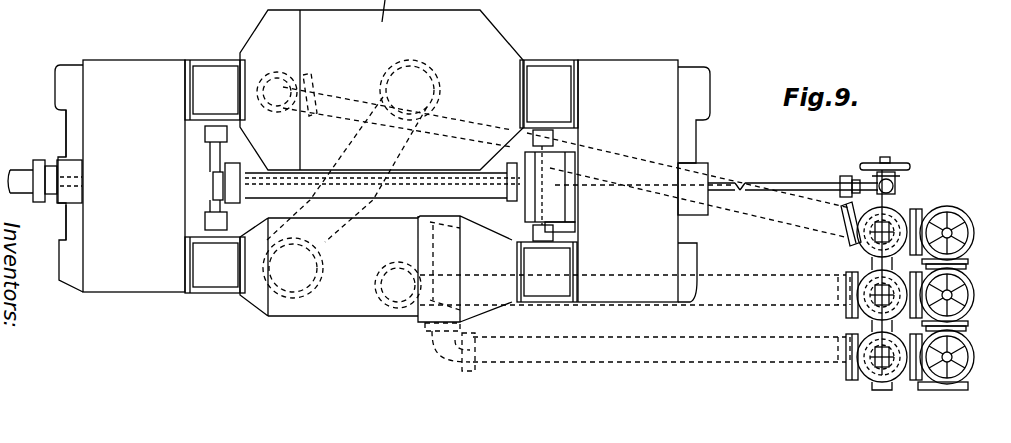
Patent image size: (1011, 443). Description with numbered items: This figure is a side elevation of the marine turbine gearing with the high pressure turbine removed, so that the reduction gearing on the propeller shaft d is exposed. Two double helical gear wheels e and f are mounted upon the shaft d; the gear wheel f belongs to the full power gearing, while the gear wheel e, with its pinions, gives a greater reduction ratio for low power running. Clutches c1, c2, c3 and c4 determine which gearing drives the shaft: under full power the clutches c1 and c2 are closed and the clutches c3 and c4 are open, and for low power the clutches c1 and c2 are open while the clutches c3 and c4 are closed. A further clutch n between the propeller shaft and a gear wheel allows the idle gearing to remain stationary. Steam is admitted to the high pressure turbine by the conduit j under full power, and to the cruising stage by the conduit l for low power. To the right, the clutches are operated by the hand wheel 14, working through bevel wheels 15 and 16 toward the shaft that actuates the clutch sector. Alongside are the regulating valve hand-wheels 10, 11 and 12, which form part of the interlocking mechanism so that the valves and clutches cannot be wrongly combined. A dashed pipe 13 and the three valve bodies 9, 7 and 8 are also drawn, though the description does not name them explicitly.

The double helical gear wheel e is at (140, 70).
The propeller shaft d is at (22, 172).
The clutch c4 is at (224, 70).
The clutch c3 is at (213, 283).
The clutch c2 is at (551, 78).
The clutch c1 is at (543, 288).
The clutch n is at (563, 200).
The double helical gear wheel f is at (633, 77).
The pipe 13 is at (660, 193).
The conduit j is at (659, 326).
The conduit l is at (604, 358).
The bevel wheel 15 is at (870, 182).
The hand wheel 14 is at (895, 166).
The bevel wheel 16 is at (897, 186).
The valve 9 is at (853, 249).
The valve 7 is at (858, 313).
The valve 8 is at (868, 367).
The regulating valve hand-wheel 12 is at (922, 222).
The regulating valve hand-wheel 10 is at (966, 262).
The regulating valve hand-wheel 11 is at (890, 380).